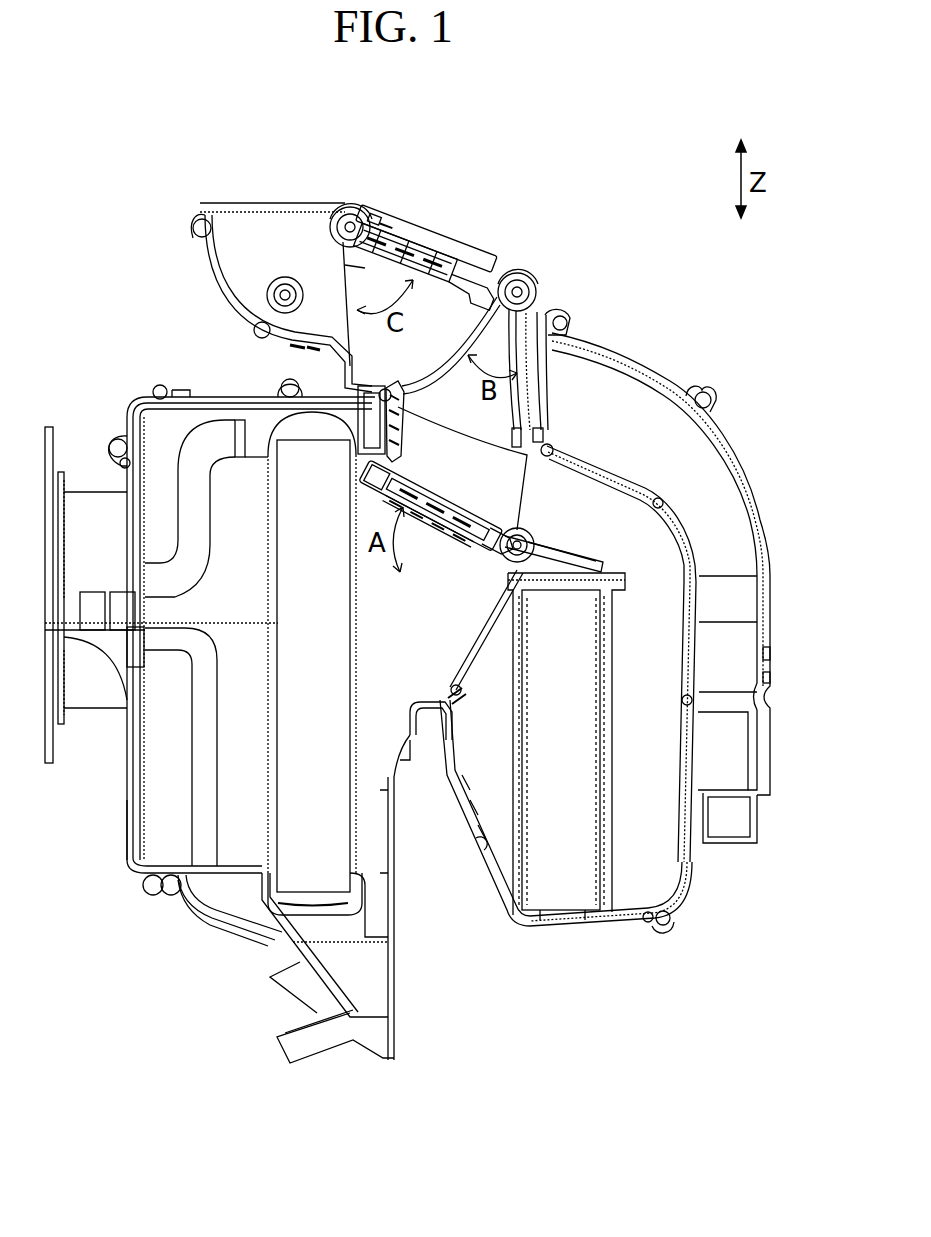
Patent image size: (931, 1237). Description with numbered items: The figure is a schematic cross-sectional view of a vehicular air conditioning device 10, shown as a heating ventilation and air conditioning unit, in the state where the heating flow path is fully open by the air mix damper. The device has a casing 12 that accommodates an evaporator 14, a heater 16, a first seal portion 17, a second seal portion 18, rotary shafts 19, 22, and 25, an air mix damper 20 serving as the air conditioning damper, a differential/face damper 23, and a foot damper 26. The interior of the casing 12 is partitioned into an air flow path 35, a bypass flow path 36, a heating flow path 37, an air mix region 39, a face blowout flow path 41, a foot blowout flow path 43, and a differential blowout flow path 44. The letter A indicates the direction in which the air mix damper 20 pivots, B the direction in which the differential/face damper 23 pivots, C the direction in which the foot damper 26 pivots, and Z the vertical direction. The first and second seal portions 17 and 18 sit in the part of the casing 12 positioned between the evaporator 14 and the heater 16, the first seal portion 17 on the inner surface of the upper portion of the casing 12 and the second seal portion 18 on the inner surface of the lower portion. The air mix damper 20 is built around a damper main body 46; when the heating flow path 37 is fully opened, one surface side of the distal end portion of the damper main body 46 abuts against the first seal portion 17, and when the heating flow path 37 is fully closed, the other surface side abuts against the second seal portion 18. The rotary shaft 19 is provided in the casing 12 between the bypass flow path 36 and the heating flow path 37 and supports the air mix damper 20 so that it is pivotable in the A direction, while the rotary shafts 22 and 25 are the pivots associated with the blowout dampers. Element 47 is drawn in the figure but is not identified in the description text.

The vehicular air conditioning device 10 is at (86, 92).
The casing 12 is at (128, 880).
The evaporator 14 is at (297, 612).
The heater 16 is at (557, 880).
The first seal portion 17 is at (400, 442).
The second seal portion 18 is at (448, 690).
The rotary shaft 19 is at (533, 532).
The air mix damper 20 is at (450, 533).
The rotary shaft 22 is at (349, 208).
The differential/face damper 23 is at (443, 262).
The rotary shaft 25 is at (527, 282).
The foot damper 26 is at (548, 375).
The air flow path 35 is at (230, 770).
The bypass flow path 36 is at (412, 742).
The heating flow path 37 is at (645, 663).
The air mix region 39 is at (655, 410).
The face blowout flow path 41 is at (408, 228).
The foot blowout flow path 43 is at (712, 468).
The differential blowout flow path 44 is at (265, 222).
The damper main body 46 is at (428, 512).
The lever arm 47 is at (593, 560).